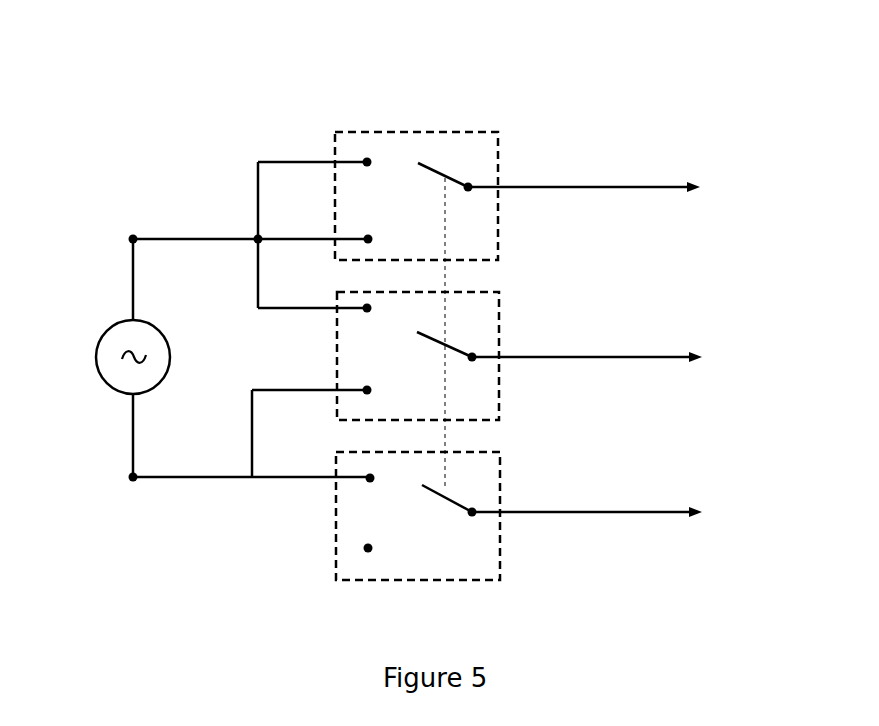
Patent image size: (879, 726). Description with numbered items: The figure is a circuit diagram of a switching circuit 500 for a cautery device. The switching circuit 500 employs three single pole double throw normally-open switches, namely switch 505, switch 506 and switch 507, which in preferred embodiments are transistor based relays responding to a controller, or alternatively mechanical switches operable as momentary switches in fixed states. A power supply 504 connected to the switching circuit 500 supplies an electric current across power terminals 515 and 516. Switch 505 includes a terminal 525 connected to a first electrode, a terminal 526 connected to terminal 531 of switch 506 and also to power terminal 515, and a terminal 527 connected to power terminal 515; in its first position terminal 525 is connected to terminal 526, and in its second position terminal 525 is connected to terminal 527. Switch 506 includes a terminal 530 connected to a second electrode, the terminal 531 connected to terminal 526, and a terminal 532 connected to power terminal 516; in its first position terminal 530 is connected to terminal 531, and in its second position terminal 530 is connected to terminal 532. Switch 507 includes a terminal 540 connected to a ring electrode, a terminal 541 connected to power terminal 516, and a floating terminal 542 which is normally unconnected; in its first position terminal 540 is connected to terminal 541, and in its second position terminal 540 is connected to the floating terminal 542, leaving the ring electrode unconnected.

The switching circuit 500 is at (153, 180).
The power supply 504 is at (97, 347).
The power terminal 515 is at (133, 237).
The power terminal 516 is at (135, 483).
The switch 505 is at (463, 132).
The switch 506 is at (500, 313).
The switch 507 is at (497, 490).
The terminal 525 is at (470, 187).
The terminal 526 is at (367, 160).
The terminal 527 is at (368, 238).
The terminal 530 is at (475, 360).
The terminal 531 is at (370, 312).
The terminal 532 is at (370, 394).
The terminal 540 is at (472, 514).
The terminal 541 is at (370, 480).
The floating terminal 542 is at (368, 550).